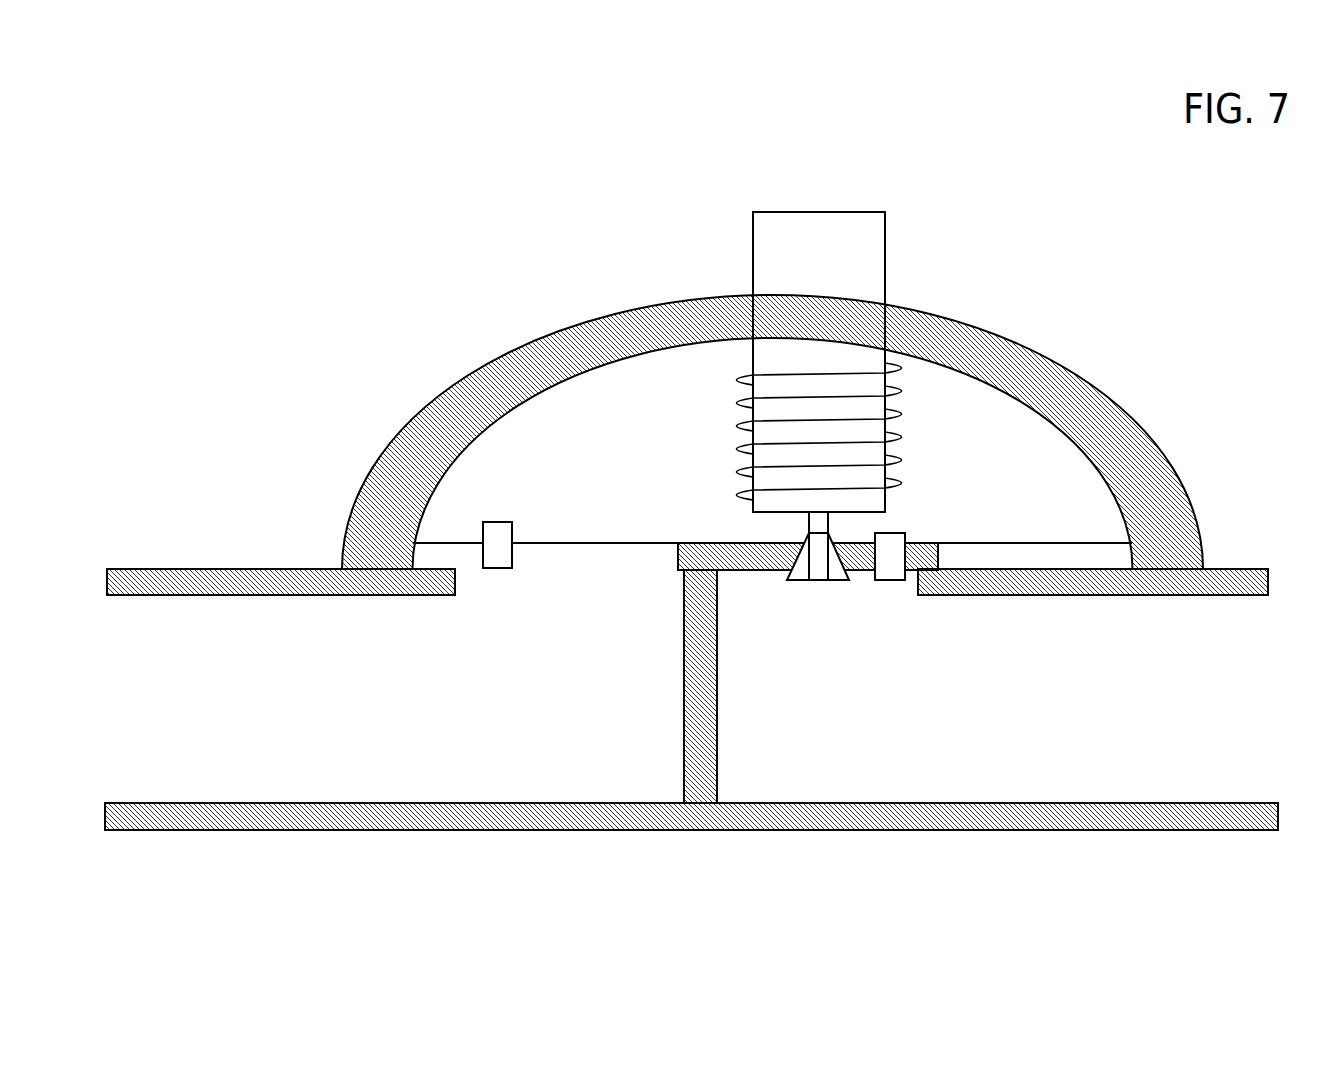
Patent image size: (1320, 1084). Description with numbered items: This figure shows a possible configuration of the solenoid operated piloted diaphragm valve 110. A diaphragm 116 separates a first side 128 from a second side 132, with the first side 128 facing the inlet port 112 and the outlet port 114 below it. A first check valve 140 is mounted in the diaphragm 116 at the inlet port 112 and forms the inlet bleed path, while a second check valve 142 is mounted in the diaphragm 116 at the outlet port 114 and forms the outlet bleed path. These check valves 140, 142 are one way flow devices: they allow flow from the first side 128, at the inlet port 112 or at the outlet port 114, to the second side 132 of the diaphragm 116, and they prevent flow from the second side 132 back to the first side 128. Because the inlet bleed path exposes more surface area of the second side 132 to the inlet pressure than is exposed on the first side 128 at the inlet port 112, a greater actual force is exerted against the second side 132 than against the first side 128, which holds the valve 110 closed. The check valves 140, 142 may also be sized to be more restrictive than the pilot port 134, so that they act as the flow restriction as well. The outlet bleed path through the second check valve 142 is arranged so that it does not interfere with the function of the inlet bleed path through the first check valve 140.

The solenoid operated piloted diaphragm valve 110 is at (351, 162).
The inlet port 112 is at (320, 742).
The outlet port 114 is at (1082, 765).
The diaphragm 116 is at (443, 542).
The first side 128 is at (614, 621).
The second side 132 is at (1066, 524).
The pilot port 134 is at (820, 570).
The first check valve 140 is at (498, 602).
The second check valve 142 is at (896, 612).